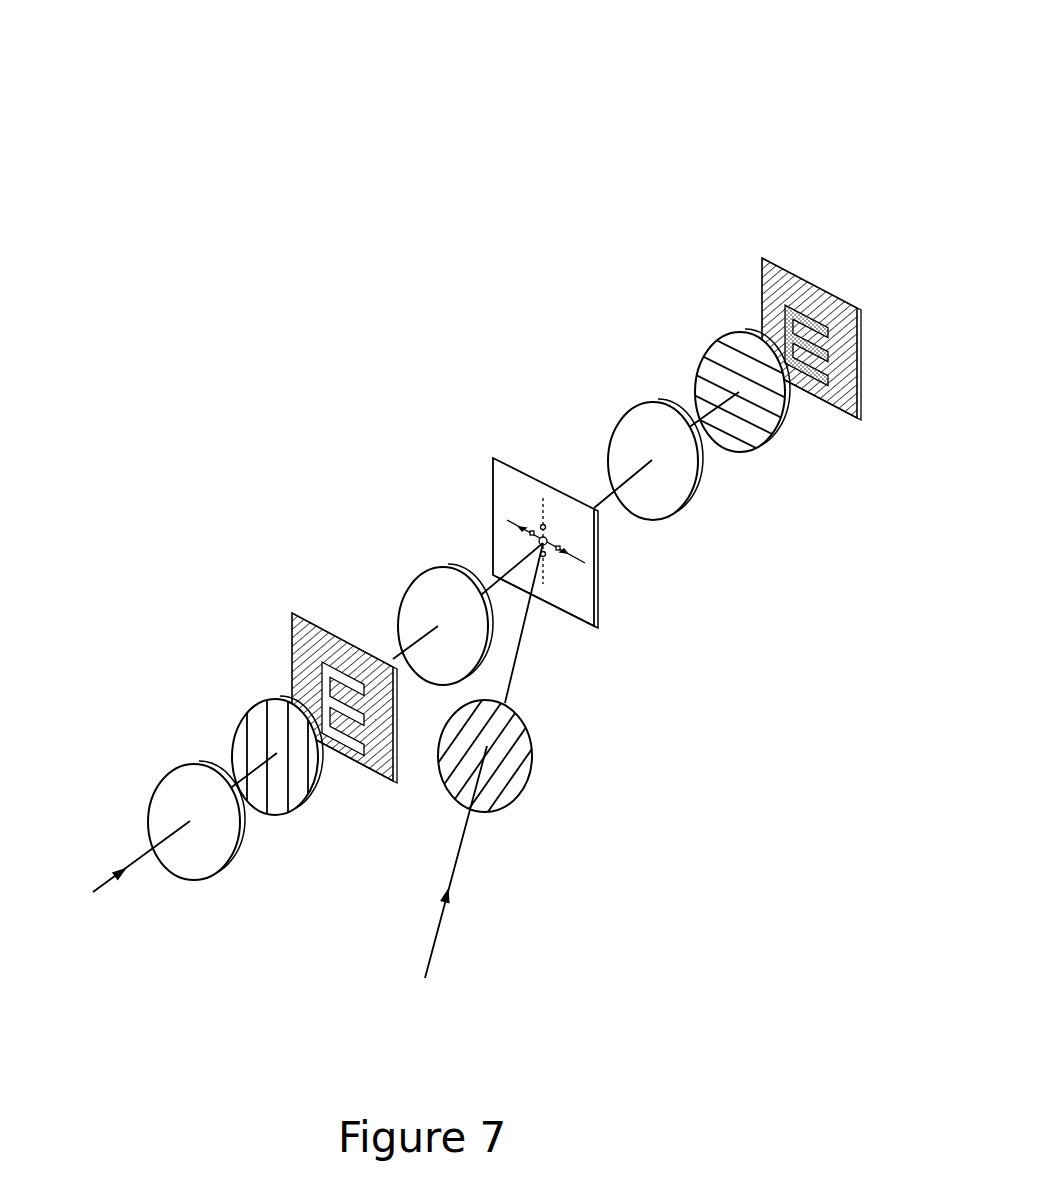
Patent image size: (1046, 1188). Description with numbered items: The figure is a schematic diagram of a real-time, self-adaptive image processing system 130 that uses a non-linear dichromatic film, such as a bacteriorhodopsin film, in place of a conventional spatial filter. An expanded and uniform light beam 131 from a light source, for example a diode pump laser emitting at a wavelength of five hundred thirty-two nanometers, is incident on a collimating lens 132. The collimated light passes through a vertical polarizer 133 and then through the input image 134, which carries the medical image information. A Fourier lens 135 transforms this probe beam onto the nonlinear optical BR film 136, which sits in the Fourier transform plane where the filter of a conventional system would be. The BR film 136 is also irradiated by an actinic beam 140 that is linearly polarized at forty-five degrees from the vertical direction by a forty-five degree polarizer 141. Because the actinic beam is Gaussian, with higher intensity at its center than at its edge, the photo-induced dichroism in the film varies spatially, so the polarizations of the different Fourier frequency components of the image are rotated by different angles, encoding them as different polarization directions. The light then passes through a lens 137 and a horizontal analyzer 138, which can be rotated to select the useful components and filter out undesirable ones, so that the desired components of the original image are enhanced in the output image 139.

The optical system 130 is at (549, 68).
The input light beam 131 is at (118, 864).
The collimating lens 132 is at (163, 773).
The vertical polarizer 133 is at (253, 707).
The input image 134 is at (292, 613).
The Fourier lens 135 is at (415, 577).
The nonlinear optical BR film 136 is at (493, 458).
The lens 137 is at (622, 408).
The horizontal analyzer 138 is at (712, 343).
The output image 139 is at (762, 258).
The actinic beam 140 is at (443, 920).
The 45° polarizer 141 is at (527, 787).